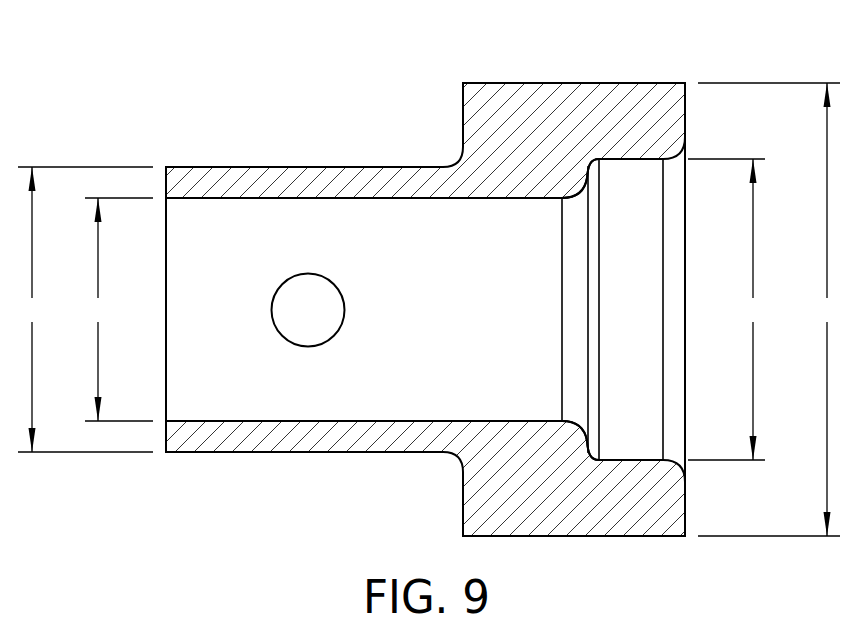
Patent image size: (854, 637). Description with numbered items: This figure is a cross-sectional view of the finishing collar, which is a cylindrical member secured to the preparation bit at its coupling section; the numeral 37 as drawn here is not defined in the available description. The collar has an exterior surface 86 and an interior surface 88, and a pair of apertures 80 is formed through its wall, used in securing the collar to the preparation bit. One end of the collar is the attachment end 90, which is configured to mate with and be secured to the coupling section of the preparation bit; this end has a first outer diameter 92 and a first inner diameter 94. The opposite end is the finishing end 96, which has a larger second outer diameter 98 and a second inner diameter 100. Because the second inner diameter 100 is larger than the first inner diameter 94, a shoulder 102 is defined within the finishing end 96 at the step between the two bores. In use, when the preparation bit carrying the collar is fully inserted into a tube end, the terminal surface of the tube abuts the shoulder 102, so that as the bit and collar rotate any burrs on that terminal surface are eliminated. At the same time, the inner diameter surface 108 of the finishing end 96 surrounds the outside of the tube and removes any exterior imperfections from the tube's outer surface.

The nozzle body 37 is at (753, 54).
The apertures 80 is at (345, 311).
The exterior surface 86 is at (311, 437).
The interior surface 88 is at (402, 420).
The attachment end 90 is at (302, 166).
The first outer diameter 92 is at (85, 309).
The first inner diameter 94 is at (119, 309).
The finishing end 96 is at (578, 539).
The second outer diameter 98 is at (769, 309).
The second inner diameter 100 is at (729, 309).
The shoulder 102 is at (589, 176).
The inner diameter surface 108 is at (632, 460).